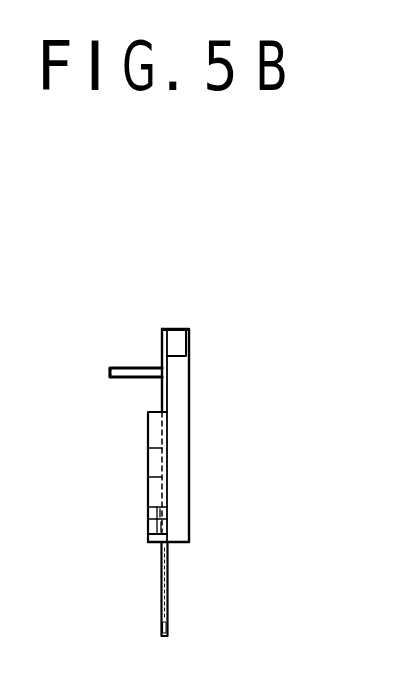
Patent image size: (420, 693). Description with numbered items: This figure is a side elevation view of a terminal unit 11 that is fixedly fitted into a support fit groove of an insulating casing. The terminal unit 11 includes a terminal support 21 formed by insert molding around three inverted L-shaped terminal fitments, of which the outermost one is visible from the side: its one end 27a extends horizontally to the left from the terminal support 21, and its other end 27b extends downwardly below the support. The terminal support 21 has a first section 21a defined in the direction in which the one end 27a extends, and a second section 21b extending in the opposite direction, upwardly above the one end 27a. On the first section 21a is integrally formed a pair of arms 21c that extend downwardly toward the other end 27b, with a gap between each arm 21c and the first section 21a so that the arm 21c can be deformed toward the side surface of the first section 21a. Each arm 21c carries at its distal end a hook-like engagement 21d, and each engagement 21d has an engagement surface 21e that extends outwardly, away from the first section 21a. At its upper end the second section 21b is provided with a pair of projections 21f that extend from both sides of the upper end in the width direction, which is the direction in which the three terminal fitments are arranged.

The terminal unit 11 is at (174, 329).
The terminal support 21 is at (191, 438).
The first section 21a is at (148, 422).
The second section 21b is at (183, 397).
The arm 21c is at (148, 463).
The hook-like engagement 21d is at (148, 527).
The engagement surface 21e is at (148, 495).
The projection 21f is at (183, 340).
The one end of terminal fitment 27a is at (118, 368).
The other end of terminal fitment 27b is at (170, 607).